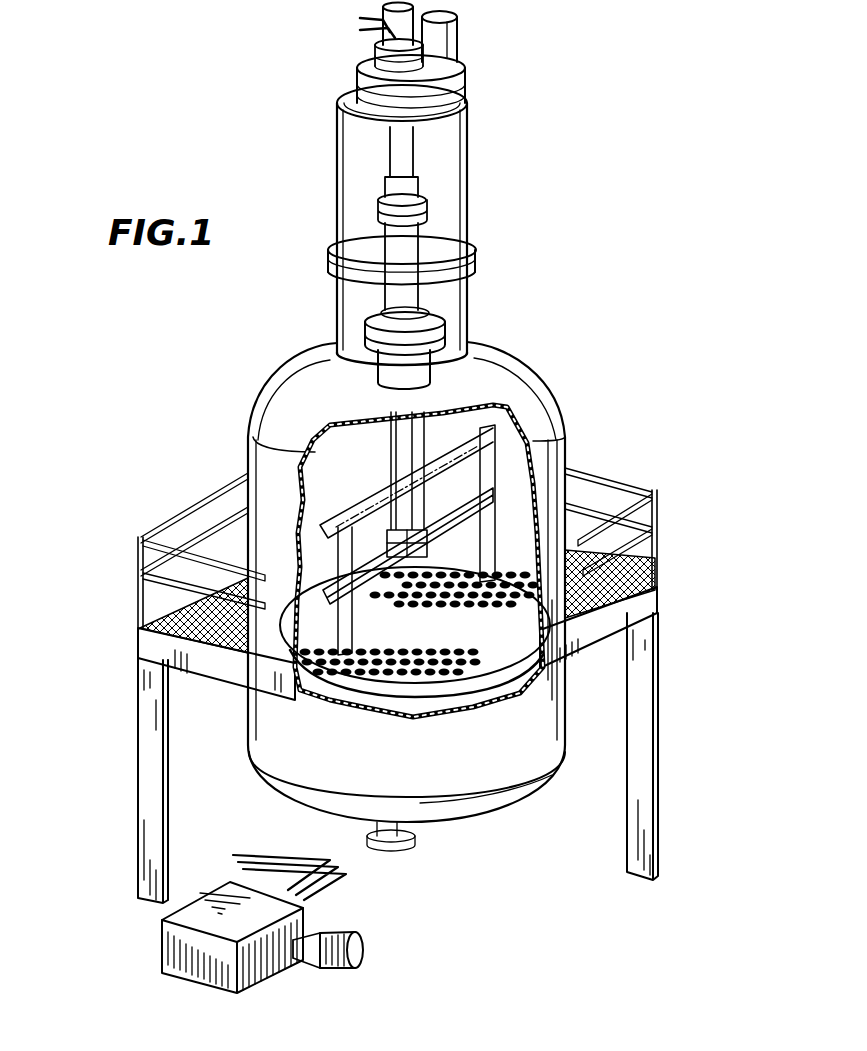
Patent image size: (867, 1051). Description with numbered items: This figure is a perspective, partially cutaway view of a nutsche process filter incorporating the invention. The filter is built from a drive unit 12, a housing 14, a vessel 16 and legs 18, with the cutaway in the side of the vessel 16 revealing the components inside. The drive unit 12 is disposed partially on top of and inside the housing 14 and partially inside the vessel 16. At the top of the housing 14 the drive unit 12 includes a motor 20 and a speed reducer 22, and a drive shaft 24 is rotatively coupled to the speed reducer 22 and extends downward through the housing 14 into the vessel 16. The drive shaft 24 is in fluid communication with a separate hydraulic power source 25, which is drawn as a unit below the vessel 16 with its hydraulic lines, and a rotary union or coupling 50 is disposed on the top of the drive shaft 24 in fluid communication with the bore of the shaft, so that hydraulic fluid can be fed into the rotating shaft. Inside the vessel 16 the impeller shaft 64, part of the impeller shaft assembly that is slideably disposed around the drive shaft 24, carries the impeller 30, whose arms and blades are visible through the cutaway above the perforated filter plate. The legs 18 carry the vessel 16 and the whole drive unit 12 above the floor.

The drive unit 12 is at (391, 196).
The housing 14 is at (468, 194).
The vessel 16 is at (566, 444).
The legs 18 is at (659, 688).
The motor 20 is at (452, 34).
The speed reducer 22 is at (460, 82).
The drive shaft 24 is at (408, 160).
The hydraulic power source 25 is at (256, 990).
The impeller 30 is at (470, 523).
The rotary union 50 is at (400, 27).
The impeller shaft 64 is at (492, 453).